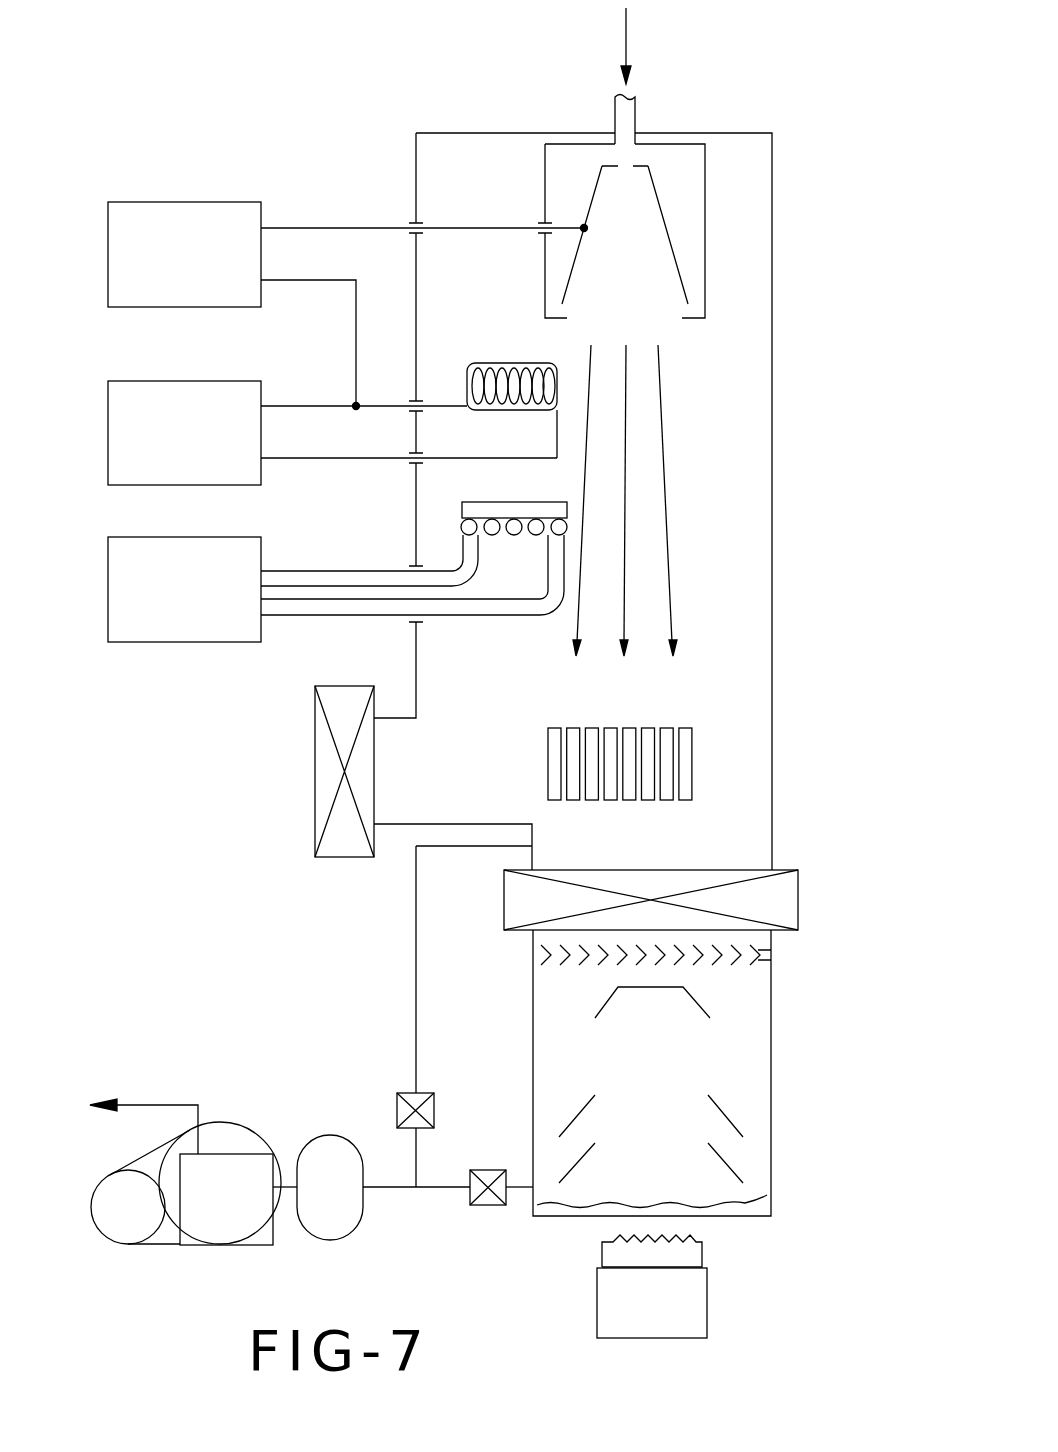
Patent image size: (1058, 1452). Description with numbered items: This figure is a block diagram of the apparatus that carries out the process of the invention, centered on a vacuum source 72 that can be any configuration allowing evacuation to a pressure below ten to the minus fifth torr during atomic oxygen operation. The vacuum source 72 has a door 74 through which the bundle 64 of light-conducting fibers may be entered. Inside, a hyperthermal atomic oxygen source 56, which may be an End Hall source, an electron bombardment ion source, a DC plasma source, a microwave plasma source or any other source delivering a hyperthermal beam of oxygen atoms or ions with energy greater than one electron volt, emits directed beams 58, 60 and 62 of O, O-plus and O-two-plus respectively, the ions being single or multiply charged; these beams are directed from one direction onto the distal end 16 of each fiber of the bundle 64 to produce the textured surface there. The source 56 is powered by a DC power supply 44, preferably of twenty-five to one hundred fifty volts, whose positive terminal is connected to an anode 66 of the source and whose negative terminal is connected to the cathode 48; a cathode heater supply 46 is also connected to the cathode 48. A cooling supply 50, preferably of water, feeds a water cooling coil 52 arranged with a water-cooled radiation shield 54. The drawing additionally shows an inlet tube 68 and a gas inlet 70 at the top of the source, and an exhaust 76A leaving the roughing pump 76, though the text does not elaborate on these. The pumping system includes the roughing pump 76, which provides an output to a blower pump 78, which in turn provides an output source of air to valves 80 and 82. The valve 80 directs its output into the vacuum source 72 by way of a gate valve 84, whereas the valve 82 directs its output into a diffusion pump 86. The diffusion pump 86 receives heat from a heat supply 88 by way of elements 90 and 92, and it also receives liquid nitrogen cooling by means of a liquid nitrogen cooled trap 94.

The distal end 16 is at (566, 741).
The DC power supply 44 is at (178, 202).
The cathode heater supply 46 is at (156, 381).
The cathode 48 is at (540, 363).
The cooling supply 50 is at (138, 537).
The water cooling coil 52 is at (513, 536).
The water-cooled radiation shield 54 is at (527, 502).
The hyperthermal atomic oxygen source 56 is at (705, 200).
The beam 58 is at (587, 462).
The beam 60 is at (625, 534).
The beam 62 is at (670, 589).
The bundle 64 is at (548, 777).
The anode 66 is at (593, 200).
The gas inlet tube 68 is at (637, 121).
The oxygen gas inlet 70 is at (622, 35).
The vacuum source 72 is at (783, 149).
The door 74 is at (315, 770).
The roughing pump 76 is at (233, 1125).
The pump exhaust 76A is at (140, 1104).
The blower pump 78 is at (345, 1140).
The valve 80 is at (434, 1105).
The valve 82 is at (485, 1205).
The gate valve 84 is at (798, 885).
The diffusion pump 86 is at (771, 1035).
The heat supply 88 is at (707, 1300).
The element 90 is at (702, 1255).
The element 92 is at (747, 1200).
The liquid nitrogen cooled trap 94 is at (541, 952).